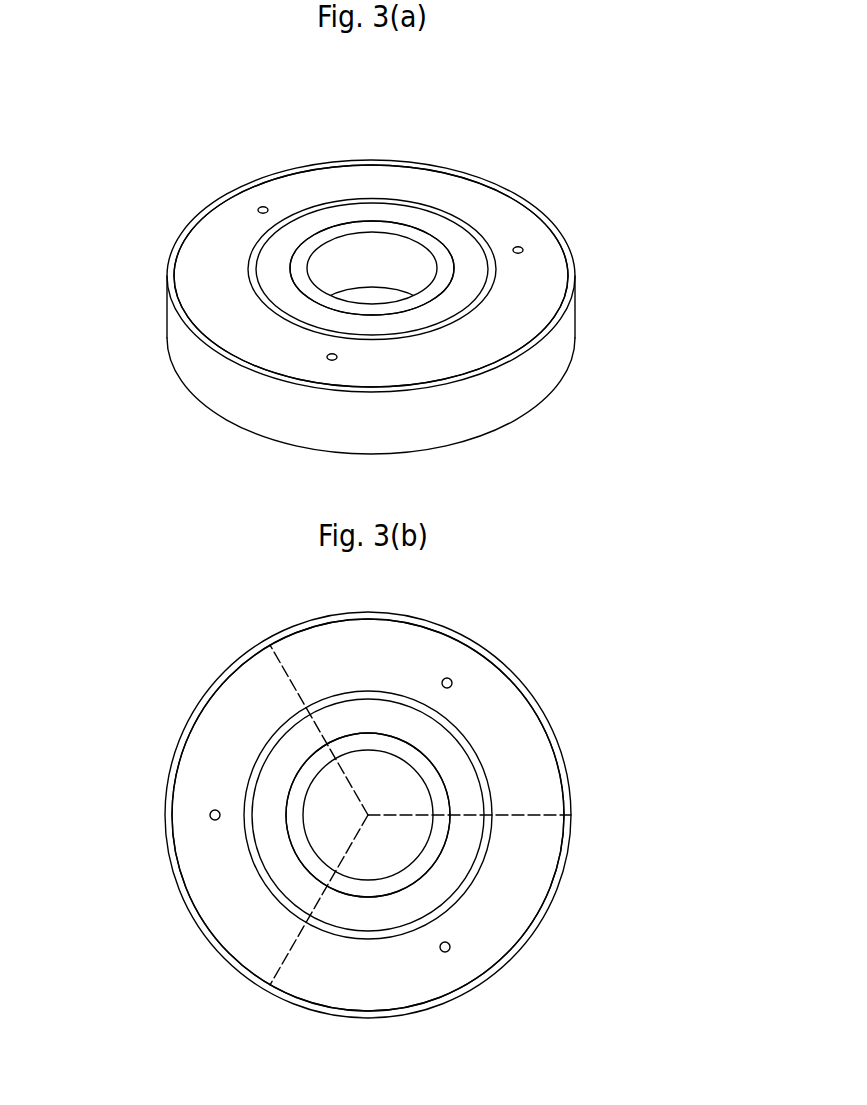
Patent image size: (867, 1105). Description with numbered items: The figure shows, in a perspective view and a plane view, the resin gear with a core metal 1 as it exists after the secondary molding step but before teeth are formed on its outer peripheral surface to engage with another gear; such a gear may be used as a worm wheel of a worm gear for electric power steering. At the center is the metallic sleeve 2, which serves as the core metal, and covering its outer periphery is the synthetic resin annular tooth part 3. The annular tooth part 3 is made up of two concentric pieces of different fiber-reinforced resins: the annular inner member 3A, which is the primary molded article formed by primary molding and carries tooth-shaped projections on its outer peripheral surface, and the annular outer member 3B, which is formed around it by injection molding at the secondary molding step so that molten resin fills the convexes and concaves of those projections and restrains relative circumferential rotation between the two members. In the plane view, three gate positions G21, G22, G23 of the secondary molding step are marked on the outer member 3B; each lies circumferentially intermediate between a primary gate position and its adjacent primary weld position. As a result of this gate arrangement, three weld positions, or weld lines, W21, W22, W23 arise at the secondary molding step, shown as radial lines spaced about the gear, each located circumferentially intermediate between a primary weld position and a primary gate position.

In FIG. 3A, the resin gear with a core metal 1 is at (508, 125).
In FIG. 3B, the resin gear with a core metal 1 is at (558, 910).
In FIG. 3A, the metallic sleeve 2 is at (348, 230).
In FIG. 3B, the metallic sleeve 2 is at (367, 740).
In FIG. 3A, the annular tooth part 3 is at (468, 94).
In FIG. 3B, the annular tooth part 3 is at (596, 630).
In FIG. 3A, the annular inner member 3A is at (390, 208).
In FIG. 3B, the annular inner member 3A is at (440, 737).
In FIG. 3A, the annular outer member 3B is at (430, 171).
In FIG. 3B, the annular outer member 3B is at (520, 738).
In FIG. 3A, the gate position G21 is at (519, 246).
In FIG. 3B, the gate position G21 is at (447, 678).
In FIG. 3A, the gate position G22 is at (338, 357).
In FIG. 3B, the gate position G22 is at (450, 953).
In FIG. 3A, the gate position G23 is at (263, 206).
In FIG. 3B, the gate position G23 is at (210, 815).
In FIG. 3B, the weld position W21 is at (508, 815).
In FIG. 3B, the weld position W22 is at (298, 937).
In FIG. 3B, the weld position W23 is at (297, 695).